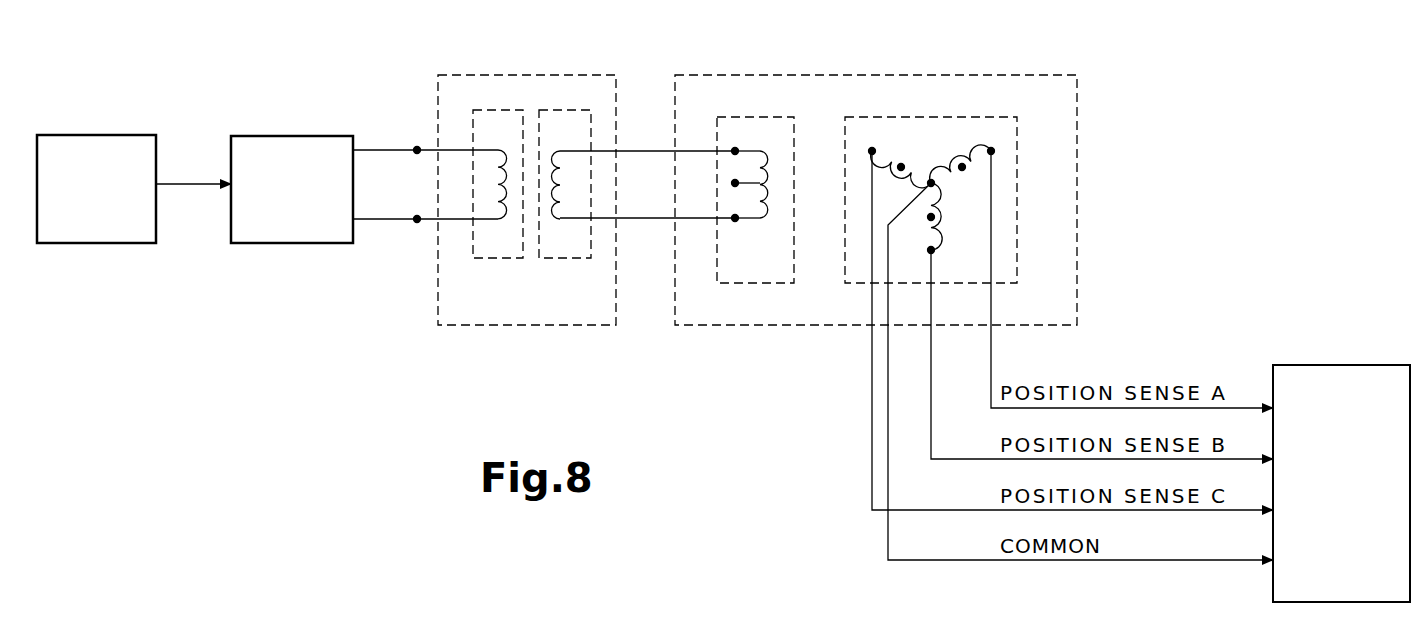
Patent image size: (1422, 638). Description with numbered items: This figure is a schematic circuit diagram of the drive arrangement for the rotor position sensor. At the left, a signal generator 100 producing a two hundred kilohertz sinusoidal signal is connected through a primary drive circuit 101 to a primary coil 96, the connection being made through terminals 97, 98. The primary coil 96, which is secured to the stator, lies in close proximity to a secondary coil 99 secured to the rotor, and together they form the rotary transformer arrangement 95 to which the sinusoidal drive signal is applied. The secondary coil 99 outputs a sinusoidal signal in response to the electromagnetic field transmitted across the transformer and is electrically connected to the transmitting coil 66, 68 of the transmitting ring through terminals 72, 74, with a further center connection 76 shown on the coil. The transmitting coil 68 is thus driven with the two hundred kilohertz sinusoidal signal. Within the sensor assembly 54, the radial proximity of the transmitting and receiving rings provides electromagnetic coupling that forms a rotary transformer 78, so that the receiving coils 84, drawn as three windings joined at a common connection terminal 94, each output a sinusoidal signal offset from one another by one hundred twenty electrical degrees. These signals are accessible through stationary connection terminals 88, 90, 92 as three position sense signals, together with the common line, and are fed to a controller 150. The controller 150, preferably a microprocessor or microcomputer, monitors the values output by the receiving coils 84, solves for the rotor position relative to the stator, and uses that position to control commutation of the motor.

The signal generator 100 is at (92, 148).
The primary drive circuit 101 is at (288, 145).
The terminal 97 is at (417, 147).
The terminal 98 is at (417, 216).
The rotary transformer arrangement 95 is at (507, 75).
The primary coil 96 is at (500, 182).
The secondary coil 99 is at (560, 183).
The terminal 72 is at (735, 151).
The coil center tap 76 is at (735, 183).
The terminal 74 is at (735, 218).
The transmitting coil 66 is at (767, 117).
The transmitting coil 68 is at (766, 198).
The position sensor assembly 54 is at (865, 75).
The connection terminal 88 is at (872, 151).
The connection terminal 90 is at (991, 151).
The common connection terminal 94 is at (931, 183).
The connection terminal 92 is at (931, 250).
The receiving coils 84 is at (1010, 283).
The rotary transformer 78 is at (815, 290).
The controller 150 is at (1318, 388).